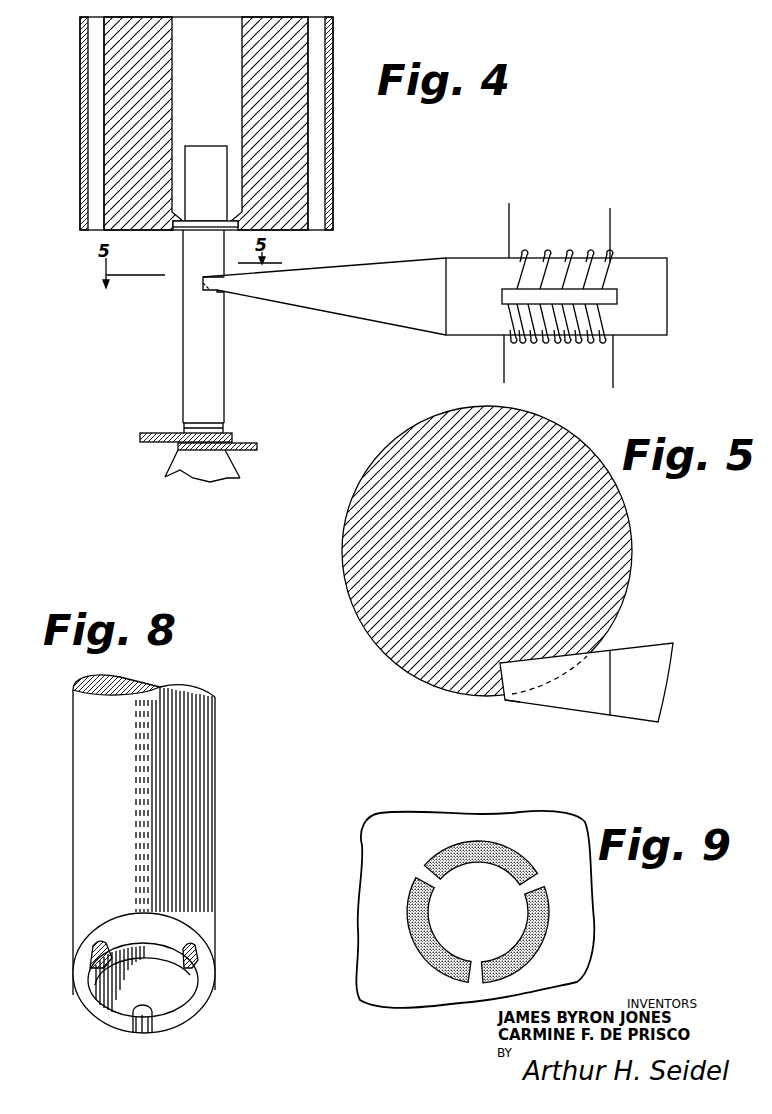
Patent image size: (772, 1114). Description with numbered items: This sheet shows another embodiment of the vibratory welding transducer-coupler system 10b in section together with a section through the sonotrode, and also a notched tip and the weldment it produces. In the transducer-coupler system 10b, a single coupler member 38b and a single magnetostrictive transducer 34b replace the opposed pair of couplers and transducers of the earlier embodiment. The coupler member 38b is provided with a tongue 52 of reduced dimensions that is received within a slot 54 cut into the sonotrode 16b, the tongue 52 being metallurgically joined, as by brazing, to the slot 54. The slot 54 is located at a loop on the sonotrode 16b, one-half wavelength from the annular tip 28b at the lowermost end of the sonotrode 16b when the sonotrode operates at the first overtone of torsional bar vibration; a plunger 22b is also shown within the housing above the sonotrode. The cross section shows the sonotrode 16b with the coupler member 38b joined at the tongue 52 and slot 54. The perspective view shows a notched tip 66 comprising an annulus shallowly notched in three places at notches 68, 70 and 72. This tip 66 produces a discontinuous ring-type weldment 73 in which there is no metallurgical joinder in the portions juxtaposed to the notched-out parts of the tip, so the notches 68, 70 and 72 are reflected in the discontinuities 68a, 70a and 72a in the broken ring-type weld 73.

In FIG. 4, the vibratory welding transducer-coupler system 10b is at (148, 307).
In FIG. 4, the sonotrode 16b is at (225, 341).
In FIG. 5, the sonotrode 16b is at (620, 578).
In FIG. 4, the plunger 22b is at (204, 146).
In FIG. 4, the annular tip 28b is at (223, 428).
In FIG. 4, the magnetostrictive transducer 34b is at (492, 267).
In FIG. 4, the coupler member 38b is at (363, 313).
In FIG. 5, the coupler member 38b is at (655, 670).
In FIG. 4, the tongue 52 is at (201, 280).
In FIG. 5, the tongue 52 is at (543, 697).
In FIG. 4, the slot 54 is at (198, 288).
In FIG. 5, the slot 54 is at (517, 680).
In FIG. 8, the notched tip 66 is at (217, 980).
In FIG. 8, the notch 68 is at (193, 950).
In FIG. 8, the notch 70 is at (89, 950).
In FIG. 8, the notch 72 is at (145, 1022).
In FIG. 9, the discontinuity 68a is at (531, 882).
In FIG. 9, the discontinuity 70a is at (425, 880).
In FIG. 9, the discontinuity 72a is at (477, 972).
In FIG. 9, the weldment 73 is at (499, 924).